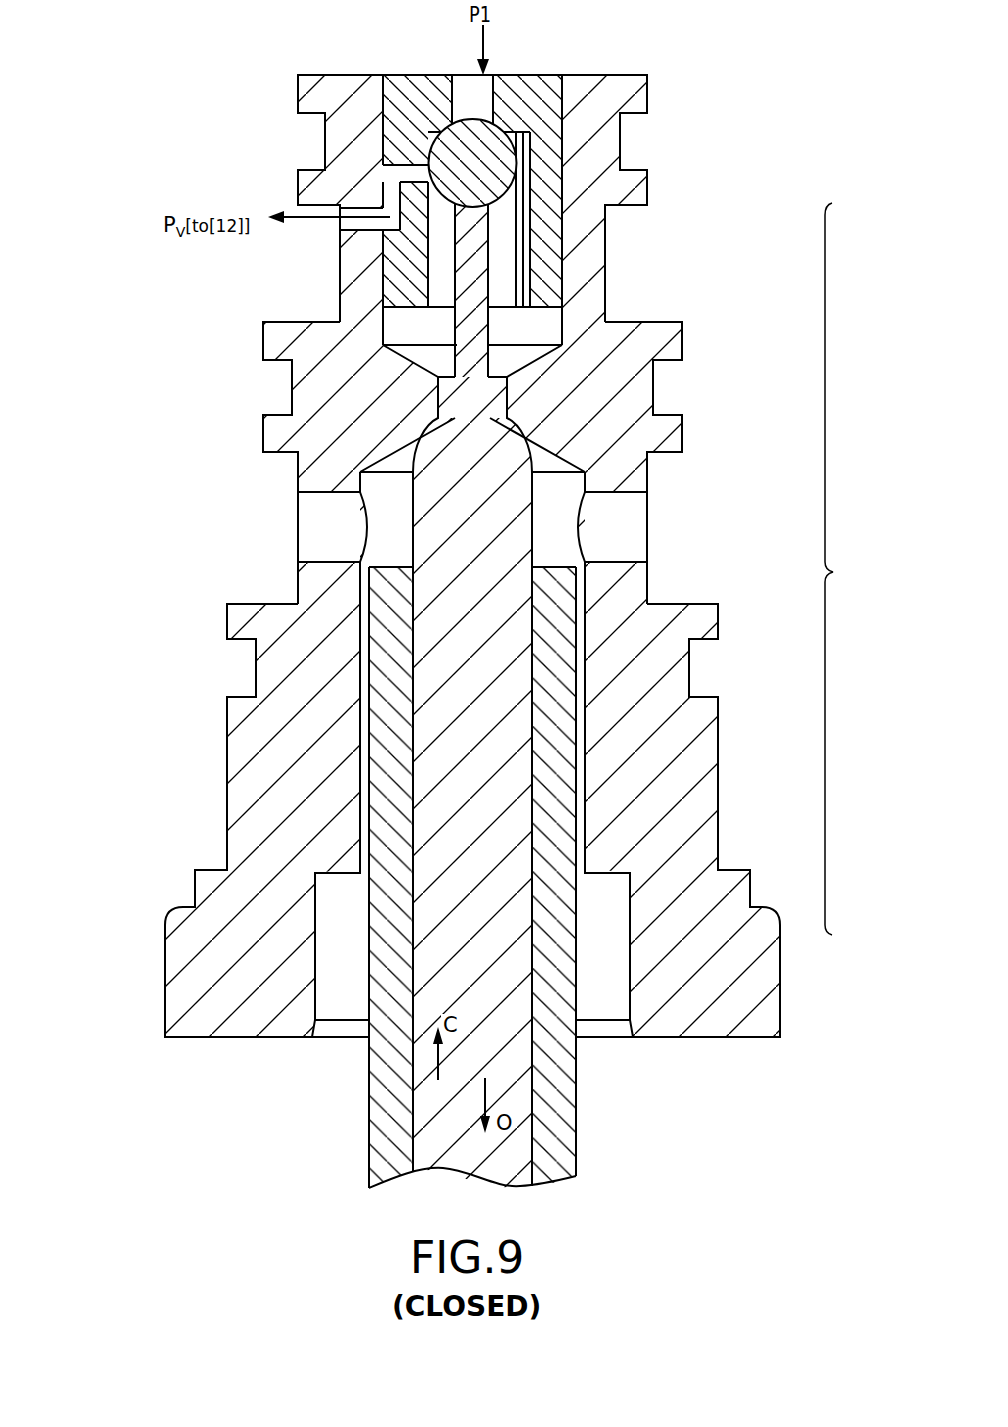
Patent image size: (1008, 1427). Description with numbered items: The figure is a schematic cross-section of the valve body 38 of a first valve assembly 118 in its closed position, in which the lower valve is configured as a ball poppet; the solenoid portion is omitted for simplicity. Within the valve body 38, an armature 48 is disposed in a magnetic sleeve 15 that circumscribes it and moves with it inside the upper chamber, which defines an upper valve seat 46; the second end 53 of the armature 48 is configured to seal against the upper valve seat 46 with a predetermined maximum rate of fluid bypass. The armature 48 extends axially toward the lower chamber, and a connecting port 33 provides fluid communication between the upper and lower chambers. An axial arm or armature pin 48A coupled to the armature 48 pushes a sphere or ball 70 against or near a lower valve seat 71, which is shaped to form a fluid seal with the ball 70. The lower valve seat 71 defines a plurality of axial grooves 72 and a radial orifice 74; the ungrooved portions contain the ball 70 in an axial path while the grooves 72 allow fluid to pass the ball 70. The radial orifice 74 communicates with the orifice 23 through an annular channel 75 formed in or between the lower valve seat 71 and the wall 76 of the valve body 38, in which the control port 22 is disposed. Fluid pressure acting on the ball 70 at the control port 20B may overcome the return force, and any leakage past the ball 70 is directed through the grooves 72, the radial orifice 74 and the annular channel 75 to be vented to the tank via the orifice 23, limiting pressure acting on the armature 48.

The magnetic sleeve 15 is at (387, 1113).
The control port 20B is at (458, 92).
The control port 22 is at (318, 542).
The orifice 23 is at (392, 223).
The connecting port 33 is at (452, 400).
The valve body 38 is at (845, 569).
The upper valve seat 46 is at (390, 453).
The armature 48 is at (494, 915).
The armature pin 48A is at (480, 247).
The second end of the armature 53 is at (492, 418).
The ball 70 is at (486, 175).
The lower valve seat 71 is at (538, 98).
The axial grooves 72 is at (437, 288).
The radial orifice 74 is at (422, 168).
The annular channel 75 is at (393, 205).
The wall 76 is at (620, 375).
The first valve assembly 118 is at (165, 1140).